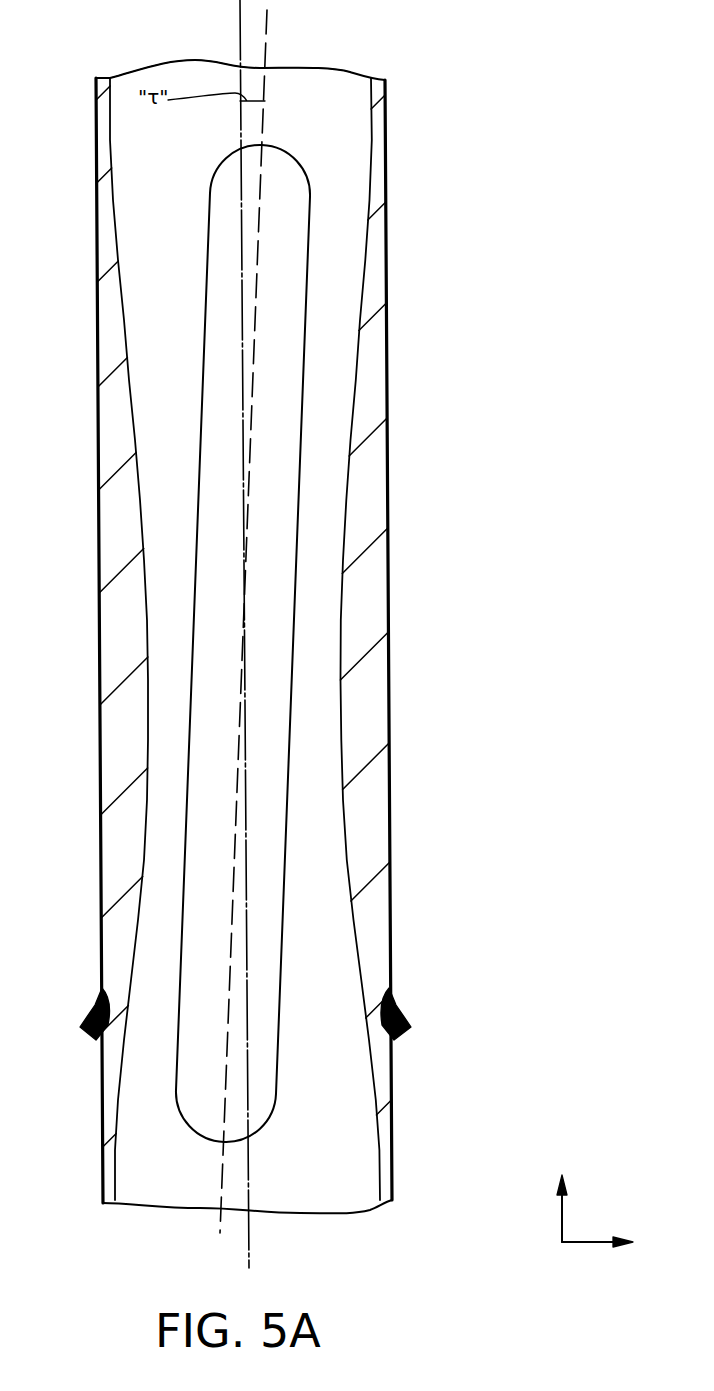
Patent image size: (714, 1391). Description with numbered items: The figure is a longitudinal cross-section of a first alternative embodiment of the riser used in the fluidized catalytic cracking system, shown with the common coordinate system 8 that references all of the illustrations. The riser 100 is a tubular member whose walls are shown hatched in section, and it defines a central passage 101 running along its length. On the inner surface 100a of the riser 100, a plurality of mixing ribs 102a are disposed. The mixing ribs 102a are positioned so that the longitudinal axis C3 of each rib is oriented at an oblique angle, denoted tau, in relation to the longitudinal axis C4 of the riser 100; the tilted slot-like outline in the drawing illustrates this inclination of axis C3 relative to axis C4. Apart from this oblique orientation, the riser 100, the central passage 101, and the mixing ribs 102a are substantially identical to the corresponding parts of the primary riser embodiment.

The riser 100 is at (397, 123).
The inner surface 100a is at (104, 78).
The central passage 101 is at (342, 1188).
The mixing rib 102a is at (106, 265).
The longitudinal axis of rib C3 is at (268, 32).
The longitudinal axis of riser C4 is at (240, 42).
The coordinate system 8 is at (588, 1246).